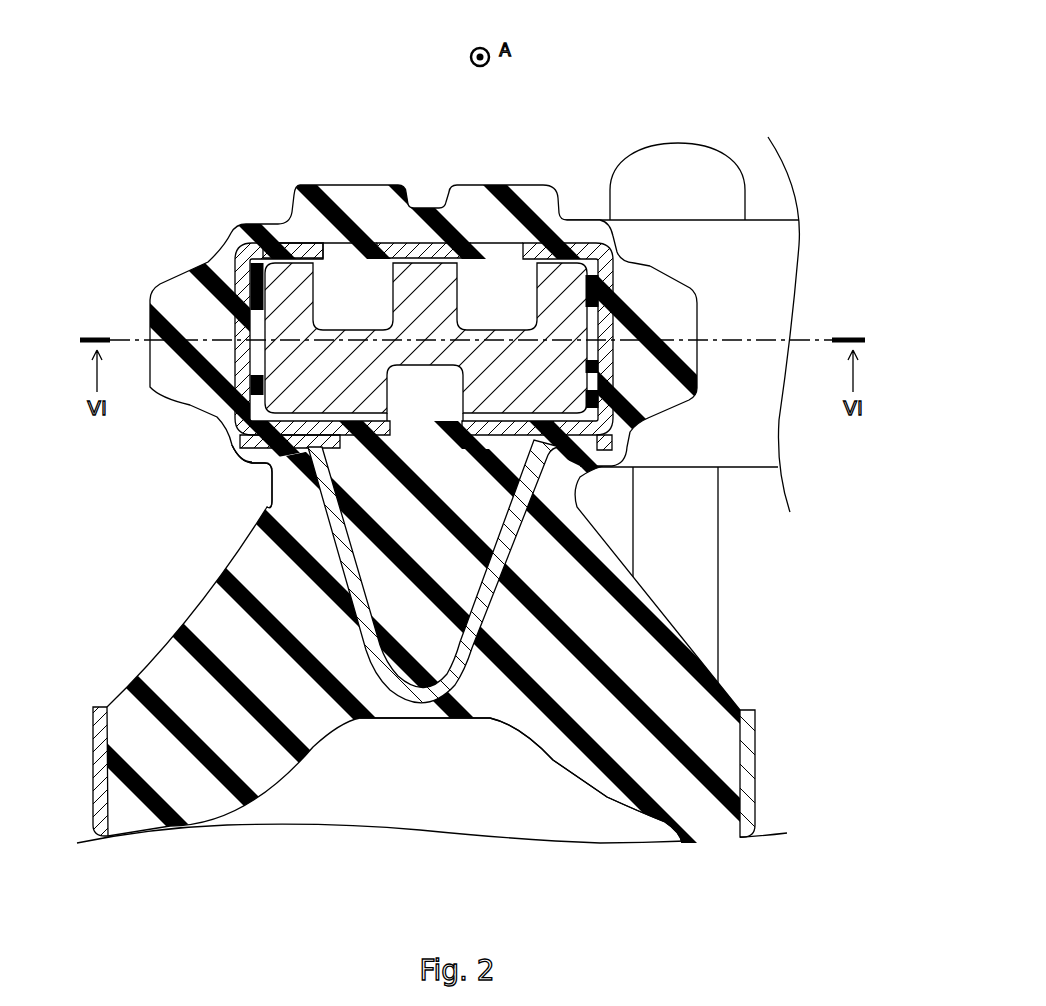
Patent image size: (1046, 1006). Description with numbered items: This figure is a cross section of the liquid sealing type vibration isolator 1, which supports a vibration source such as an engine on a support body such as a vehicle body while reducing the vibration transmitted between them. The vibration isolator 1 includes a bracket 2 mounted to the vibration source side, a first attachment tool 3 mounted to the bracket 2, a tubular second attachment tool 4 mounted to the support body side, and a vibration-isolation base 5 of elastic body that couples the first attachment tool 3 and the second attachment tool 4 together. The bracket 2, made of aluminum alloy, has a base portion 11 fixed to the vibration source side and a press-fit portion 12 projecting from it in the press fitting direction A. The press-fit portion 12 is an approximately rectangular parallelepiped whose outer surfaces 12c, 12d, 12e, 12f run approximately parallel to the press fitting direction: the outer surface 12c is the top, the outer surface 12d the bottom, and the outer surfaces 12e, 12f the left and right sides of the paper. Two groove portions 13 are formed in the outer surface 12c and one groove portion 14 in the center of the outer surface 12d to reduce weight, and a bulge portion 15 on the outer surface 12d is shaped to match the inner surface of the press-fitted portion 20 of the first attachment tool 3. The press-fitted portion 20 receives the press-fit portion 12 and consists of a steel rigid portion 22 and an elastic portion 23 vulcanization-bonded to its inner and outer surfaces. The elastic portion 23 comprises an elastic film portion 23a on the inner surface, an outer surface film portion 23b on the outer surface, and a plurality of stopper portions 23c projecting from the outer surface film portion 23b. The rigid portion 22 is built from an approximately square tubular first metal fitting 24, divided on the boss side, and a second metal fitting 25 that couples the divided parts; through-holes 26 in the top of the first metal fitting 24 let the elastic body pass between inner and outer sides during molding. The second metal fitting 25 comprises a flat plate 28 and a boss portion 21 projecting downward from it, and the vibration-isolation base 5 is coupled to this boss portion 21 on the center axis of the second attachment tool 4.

The vibration isolator 1 is at (523, 503).
The bracket 2 is at (523, 503).
The first attachment tool 3 is at (523, 503).
The second attachment tool 4 is at (757, 756).
The vibration-isolation base 5 is at (567, 760).
The base portion 11 is at (523, 503).
The press-fit portion 12 is at (425, 334).
The outer surface 12c is at (288, 250).
The outer surface 12d is at (317, 423).
The outer surface 12e is at (230, 388).
The outer surface 12f is at (628, 360).
The groove portion 13 is at (318, 300).
The groove portion 14 is at (392, 410).
The bulge portion 15 is at (483, 420).
The press-fitted portion 20 is at (523, 503).
The boss portion 21 is at (320, 510).
The rigid portion 22 is at (206, 320).
The elastic portion 23 is at (523, 503).
The elastic film portion 23a is at (617, 307).
The outer surface film portion 23b is at (612, 247).
The stopper portion 23c is at (368, 197).
The first metal fitting 24 is at (600, 360).
The second metal fitting 25 is at (236, 483).
The through-hole 26 is at (330, 250).
The flat plate 28 is at (262, 468).